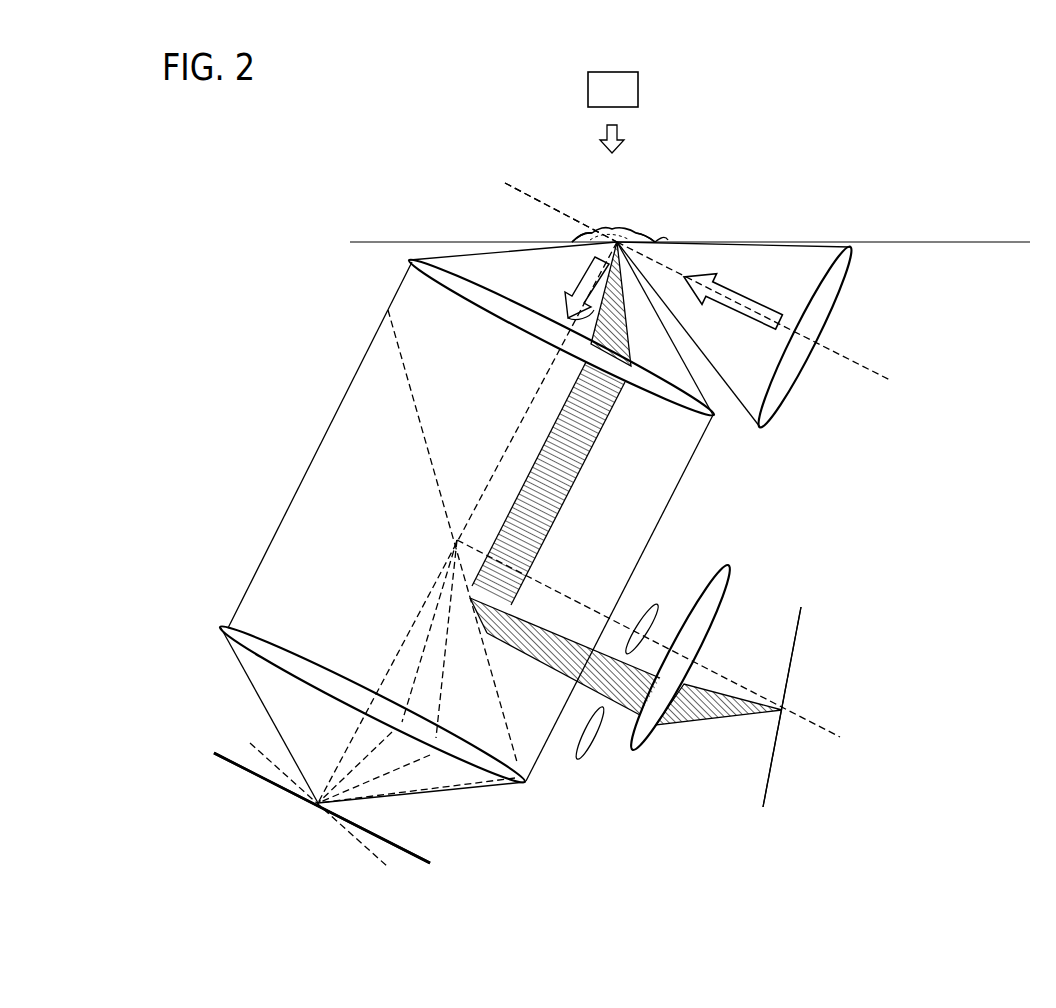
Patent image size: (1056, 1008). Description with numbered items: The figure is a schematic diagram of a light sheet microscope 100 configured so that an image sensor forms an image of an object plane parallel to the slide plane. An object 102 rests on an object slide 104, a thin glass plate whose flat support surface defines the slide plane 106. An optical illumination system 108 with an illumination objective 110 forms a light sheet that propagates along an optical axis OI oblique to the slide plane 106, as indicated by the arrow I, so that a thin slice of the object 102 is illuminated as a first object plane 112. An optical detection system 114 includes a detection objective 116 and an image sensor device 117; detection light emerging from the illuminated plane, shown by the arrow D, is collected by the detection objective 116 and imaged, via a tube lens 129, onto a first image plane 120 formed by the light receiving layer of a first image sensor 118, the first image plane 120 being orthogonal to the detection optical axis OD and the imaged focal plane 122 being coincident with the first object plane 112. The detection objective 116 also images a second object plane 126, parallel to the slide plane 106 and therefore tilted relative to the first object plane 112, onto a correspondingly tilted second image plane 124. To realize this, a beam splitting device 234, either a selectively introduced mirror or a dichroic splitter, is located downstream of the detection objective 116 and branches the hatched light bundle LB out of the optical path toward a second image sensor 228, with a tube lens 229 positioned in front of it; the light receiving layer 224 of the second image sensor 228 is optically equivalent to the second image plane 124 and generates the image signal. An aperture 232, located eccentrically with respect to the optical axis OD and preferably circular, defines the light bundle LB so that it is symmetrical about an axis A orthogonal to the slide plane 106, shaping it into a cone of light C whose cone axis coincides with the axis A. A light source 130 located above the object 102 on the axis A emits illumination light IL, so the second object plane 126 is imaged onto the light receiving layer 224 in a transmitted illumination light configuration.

The light sheet microscope 100 is at (392, 103).
The light source 130 is at (640, 88).
The illumination light IL is at (622, 138).
The first object plane 112 is at (514, 184).
The focal plane 122 is at (561, 212).
The object 102 is at (607, 228).
The second object plane 126 is at (640, 232).
The object slide 104 is at (572, 240).
The slide plane 106 is at (660, 238).
The optical illumination system 108 is at (940, 315).
The illumination objective 110 is at (770, 428).
The optical axis of the illumination objective OI is at (853, 356).
The arrow illustrating illumination I is at (750, 300).
The detection objective 116 is at (408, 263).
The optical detection system 114 is at (248, 410).
The tube lens 129 is at (221, 630).
The optical axis of the detection objective OD is at (512, 434).
The beam splitting device 234 is at (455, 600).
The first image sensor 118 is at (214, 756).
The first image plane 120 is at (432, 862).
The second image plane 124 is at (255, 742).
The axis of the object slide A is at (636, 330).
The light bundle LB is at (580, 462).
The arrow illustrating detection light D is at (575, 290).
The cone of light C is at (572, 312).
The image sensor device 117 is at (700, 840).
The aperture 232 is at (650, 600).
The tube lens 229 is at (729, 566).
The second image sensor 228 is at (763, 806).
The light receiving layer 224 is at (766, 782).